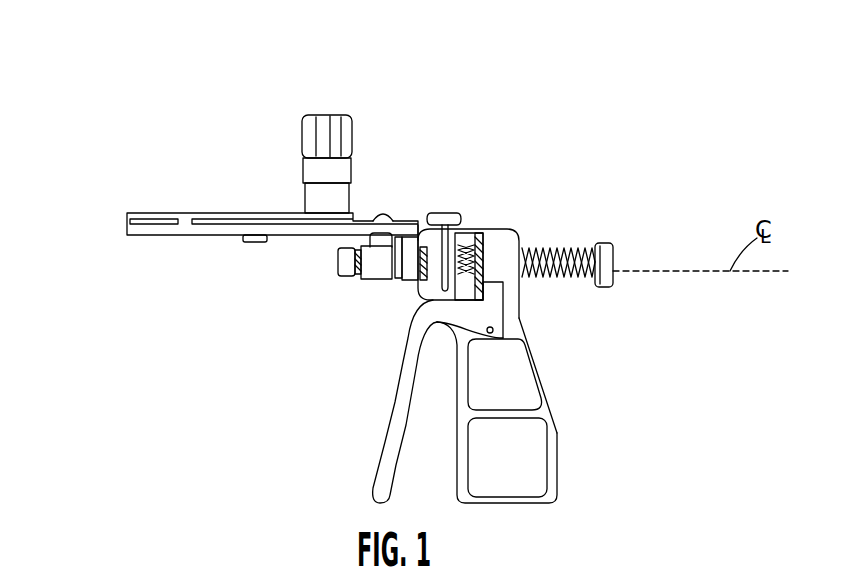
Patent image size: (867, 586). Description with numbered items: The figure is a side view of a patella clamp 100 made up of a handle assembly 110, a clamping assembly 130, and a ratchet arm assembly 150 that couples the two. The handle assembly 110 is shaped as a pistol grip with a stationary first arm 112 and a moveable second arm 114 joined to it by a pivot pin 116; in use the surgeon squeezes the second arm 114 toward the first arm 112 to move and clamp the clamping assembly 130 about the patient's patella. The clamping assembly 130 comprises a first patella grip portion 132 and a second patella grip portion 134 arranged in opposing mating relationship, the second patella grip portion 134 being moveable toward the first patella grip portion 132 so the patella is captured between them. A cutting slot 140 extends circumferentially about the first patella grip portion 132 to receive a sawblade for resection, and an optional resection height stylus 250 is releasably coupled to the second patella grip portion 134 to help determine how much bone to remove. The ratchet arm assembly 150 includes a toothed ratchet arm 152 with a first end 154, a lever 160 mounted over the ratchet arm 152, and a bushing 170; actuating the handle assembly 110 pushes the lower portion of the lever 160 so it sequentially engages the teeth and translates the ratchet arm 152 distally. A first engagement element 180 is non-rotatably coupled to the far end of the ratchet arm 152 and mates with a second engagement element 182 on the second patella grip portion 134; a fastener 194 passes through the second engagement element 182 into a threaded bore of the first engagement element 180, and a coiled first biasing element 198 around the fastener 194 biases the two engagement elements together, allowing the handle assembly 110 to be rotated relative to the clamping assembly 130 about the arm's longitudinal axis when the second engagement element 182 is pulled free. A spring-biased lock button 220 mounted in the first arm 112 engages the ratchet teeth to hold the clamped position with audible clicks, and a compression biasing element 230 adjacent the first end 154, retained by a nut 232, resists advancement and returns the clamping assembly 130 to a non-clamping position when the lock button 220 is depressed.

The patella clamp 100 is at (153, 421).
The handle assembly 110 is at (660, 401).
The first arm 112 is at (556, 436).
The second arm 114 is at (403, 357).
The pivot pin 116 is at (493, 333).
The clamping assembly 130 is at (165, 90).
The first patella grip portion 132 is at (128, 211).
The second patella grip portion 134 is at (358, 214).
The cutting slot 140 is at (127, 228).
The ratchet arm assembly 150 is at (200, 304).
The ratchet arm 152 is at (556, 250).
The first end 154 is at (630, 290).
The lever 160 is at (486, 230).
The bushing 170 is at (406, 283).
The first engagement element 180 is at (392, 282).
The second engagement element 182 is at (363, 280).
The fastener 194 is at (337, 267).
The first biasing element 198 is at (356, 274).
The lock button 220 is at (437, 212).
The biasing element 230 is at (533, 278).
The nut 232 is at (610, 242).
The resection height stylus 250 is at (312, 122).